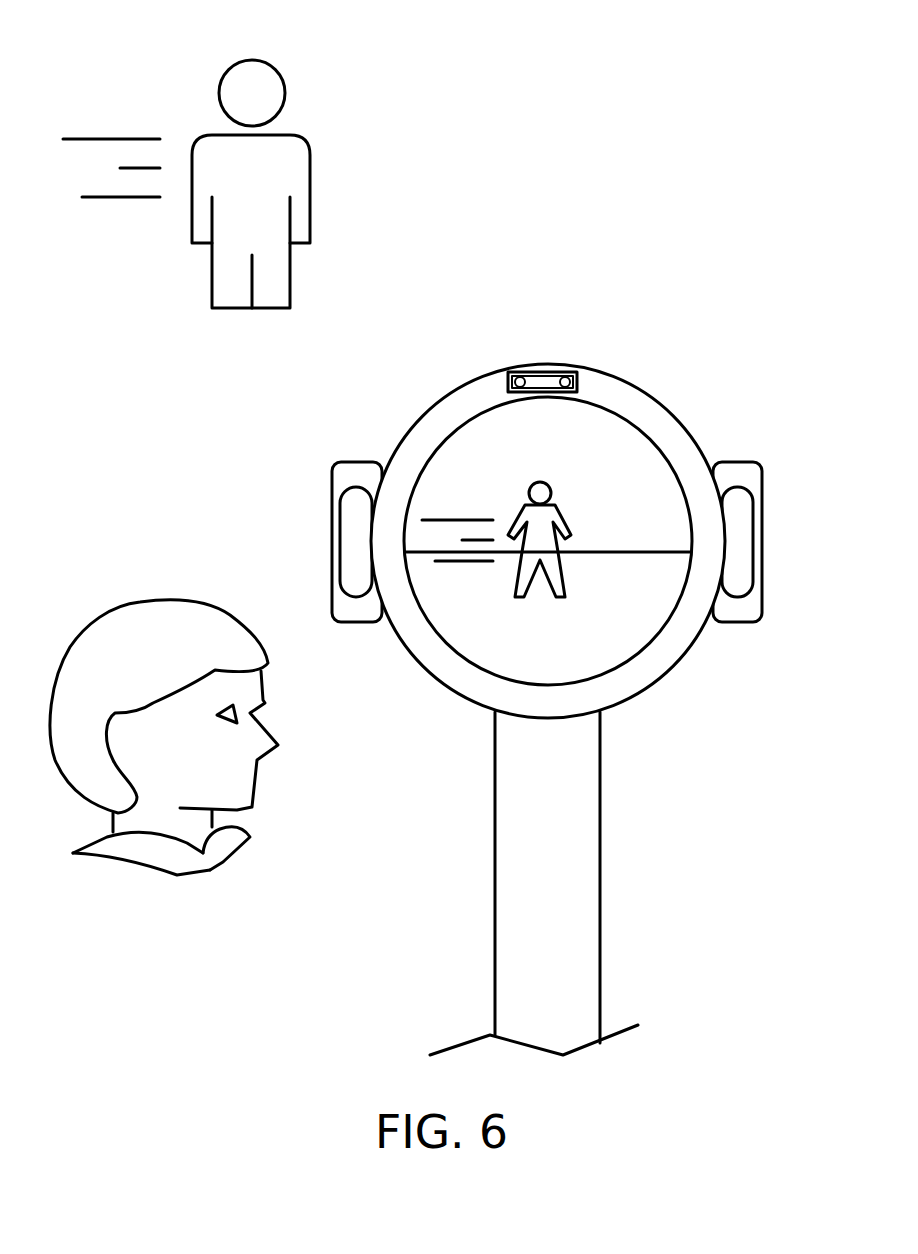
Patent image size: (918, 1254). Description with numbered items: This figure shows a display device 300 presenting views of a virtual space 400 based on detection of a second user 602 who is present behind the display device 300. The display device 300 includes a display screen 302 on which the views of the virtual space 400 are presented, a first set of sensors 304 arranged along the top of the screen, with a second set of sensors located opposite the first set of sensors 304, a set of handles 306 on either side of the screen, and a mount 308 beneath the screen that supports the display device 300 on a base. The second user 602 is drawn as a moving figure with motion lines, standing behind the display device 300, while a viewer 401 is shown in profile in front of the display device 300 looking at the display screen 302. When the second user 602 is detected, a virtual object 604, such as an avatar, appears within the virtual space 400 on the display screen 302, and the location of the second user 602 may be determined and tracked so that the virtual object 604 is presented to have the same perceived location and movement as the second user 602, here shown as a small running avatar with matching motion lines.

The display device 300 is at (533, 651).
The display screen 302 is at (475, 458).
The first set of sensors 304 is at (545, 373).
The set of handles 306 is at (342, 480).
The mount 308 is at (600, 840).
The virtual space 400 is at (647, 487).
The user 401 is at (122, 638).
The second user 602 is at (253, 88).
The virtual object 604 is at (523, 505).